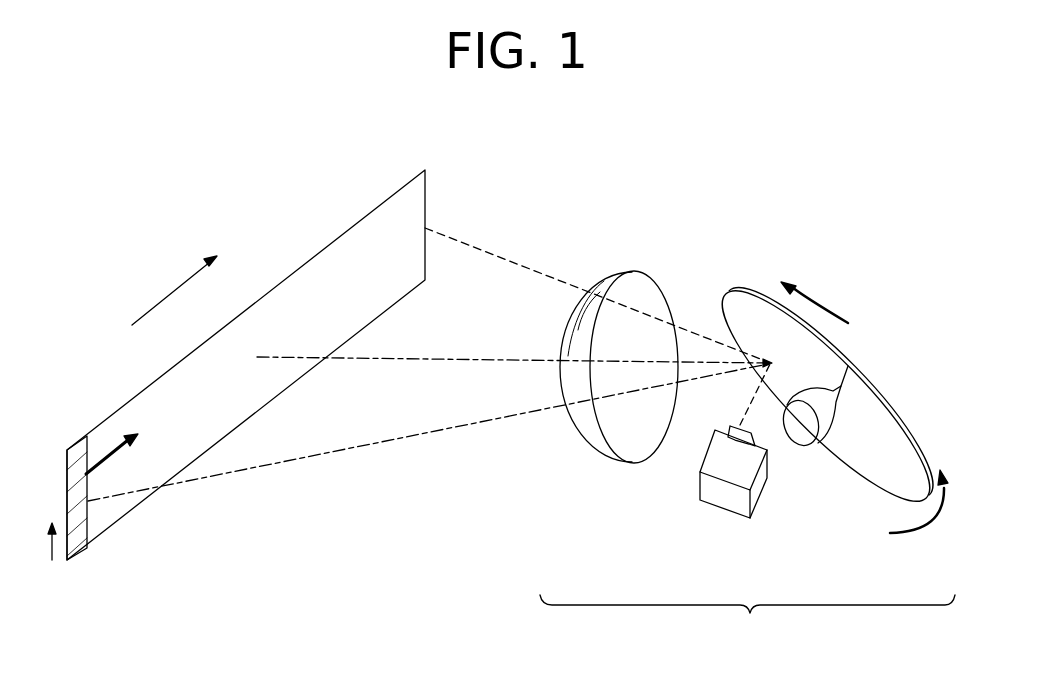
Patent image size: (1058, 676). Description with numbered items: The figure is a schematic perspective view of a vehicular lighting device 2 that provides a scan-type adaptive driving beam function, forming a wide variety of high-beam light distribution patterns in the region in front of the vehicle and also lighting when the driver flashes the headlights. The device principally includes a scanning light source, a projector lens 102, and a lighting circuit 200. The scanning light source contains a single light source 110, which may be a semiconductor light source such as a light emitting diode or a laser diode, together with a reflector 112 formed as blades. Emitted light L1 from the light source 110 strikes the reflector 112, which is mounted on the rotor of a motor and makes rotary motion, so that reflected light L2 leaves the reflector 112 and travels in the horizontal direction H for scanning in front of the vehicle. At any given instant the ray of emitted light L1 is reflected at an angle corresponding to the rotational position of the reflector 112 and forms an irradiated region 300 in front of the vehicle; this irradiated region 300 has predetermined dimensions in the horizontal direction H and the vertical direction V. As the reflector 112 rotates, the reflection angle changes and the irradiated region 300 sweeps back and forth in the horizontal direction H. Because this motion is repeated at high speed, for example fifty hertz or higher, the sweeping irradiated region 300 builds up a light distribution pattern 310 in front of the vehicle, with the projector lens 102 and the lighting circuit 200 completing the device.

The vehicular lighting device 2 is at (747, 622).
The projector lens 102 is at (590, 450).
The light source 110 is at (740, 424).
The reflector 112 is at (885, 417).
The lighting circuit 200 is at (723, 498).
The irradiated region 300 is at (77, 457).
The light distribution pattern 310 is at (318, 253).
The emitted light L1 is at (752, 412).
The reflected light L2 is at (417, 437).
The horizontal direction H is at (182, 279).
The vertical direction V is at (52, 524).